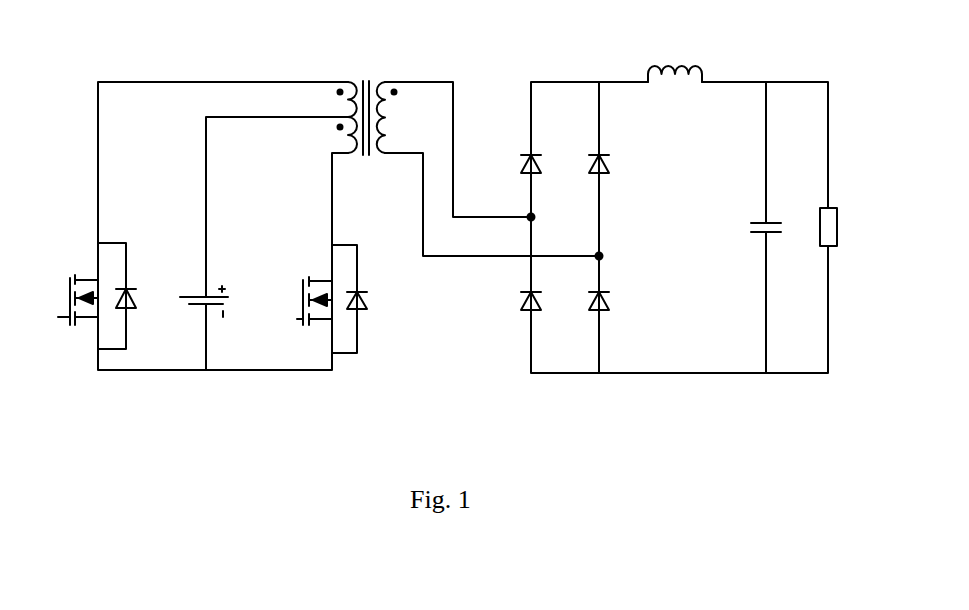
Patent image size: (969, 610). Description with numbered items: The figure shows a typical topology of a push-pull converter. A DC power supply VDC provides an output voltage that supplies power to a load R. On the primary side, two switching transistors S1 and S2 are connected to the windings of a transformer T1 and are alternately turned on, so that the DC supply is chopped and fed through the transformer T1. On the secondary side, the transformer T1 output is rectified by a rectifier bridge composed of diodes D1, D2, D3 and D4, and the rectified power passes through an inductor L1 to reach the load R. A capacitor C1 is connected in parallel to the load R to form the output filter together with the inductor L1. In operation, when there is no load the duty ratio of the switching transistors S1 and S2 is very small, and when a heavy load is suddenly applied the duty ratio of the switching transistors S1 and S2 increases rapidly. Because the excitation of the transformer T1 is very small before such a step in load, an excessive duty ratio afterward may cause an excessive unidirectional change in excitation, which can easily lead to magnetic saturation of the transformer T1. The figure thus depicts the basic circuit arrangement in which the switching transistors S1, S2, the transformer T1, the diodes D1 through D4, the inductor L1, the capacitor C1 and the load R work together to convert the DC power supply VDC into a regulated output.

The switching transistor S1 is at (85, 296).
The switching transistor S2 is at (316, 299).
The DC power supply VDC is at (194, 285).
The transformer T1 is at (379, 118).
The diode D1 is at (516, 162).
The diode D2 is at (513, 300).
The diode D3 is at (584, 164).
The diode D4 is at (582, 302).
The inductor L1 is at (675, 94).
The capacitor C1 is at (745, 230).
The load R is at (840, 227).